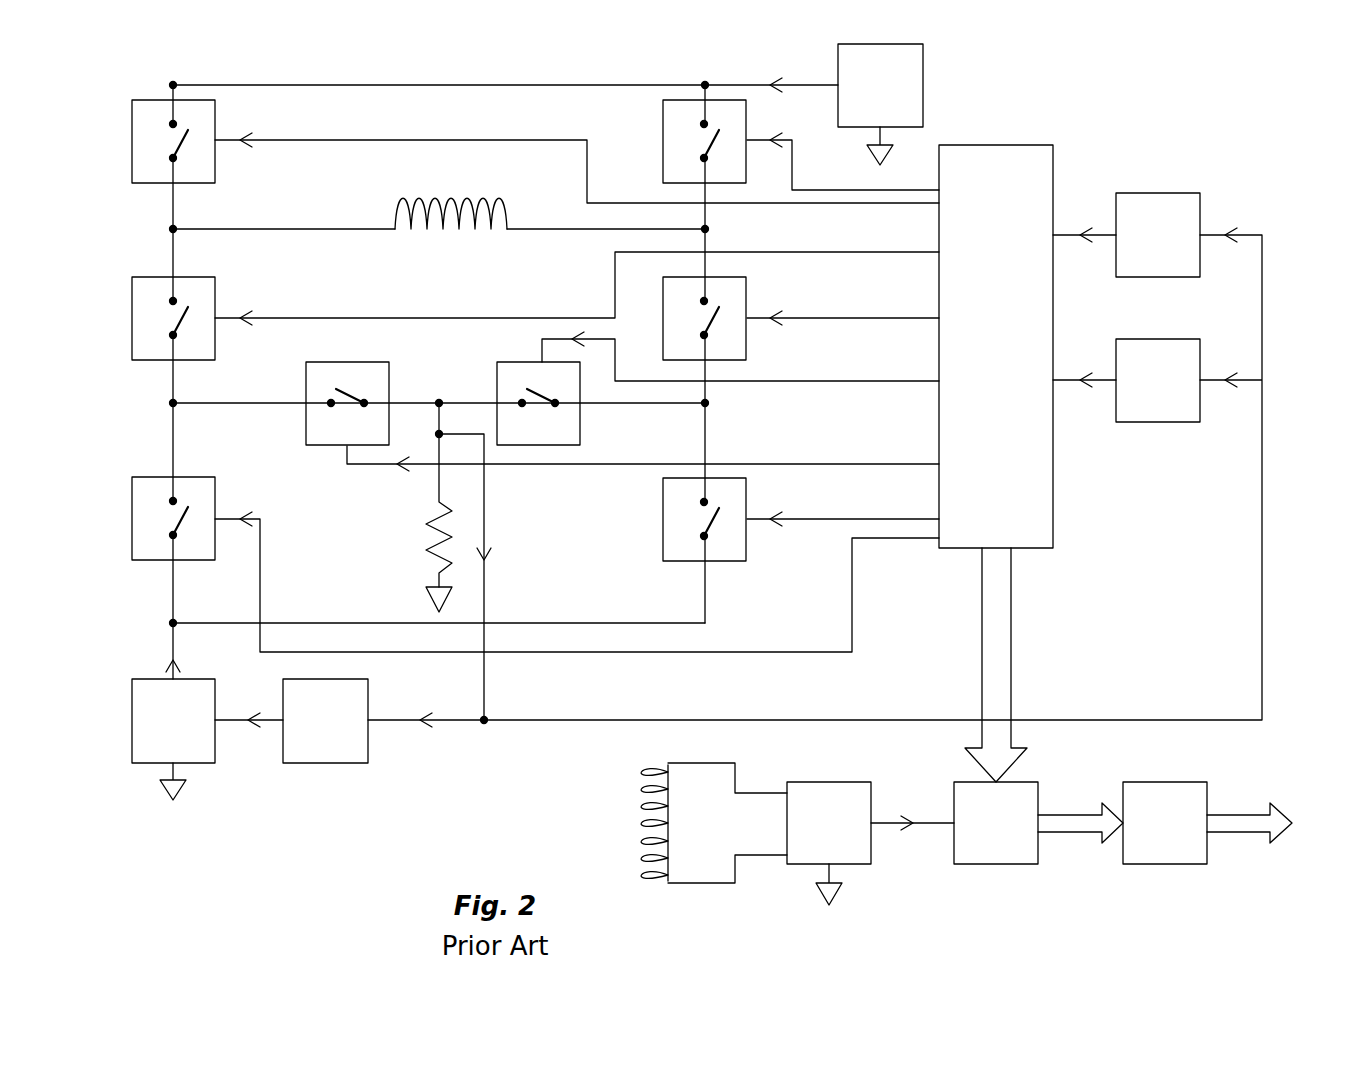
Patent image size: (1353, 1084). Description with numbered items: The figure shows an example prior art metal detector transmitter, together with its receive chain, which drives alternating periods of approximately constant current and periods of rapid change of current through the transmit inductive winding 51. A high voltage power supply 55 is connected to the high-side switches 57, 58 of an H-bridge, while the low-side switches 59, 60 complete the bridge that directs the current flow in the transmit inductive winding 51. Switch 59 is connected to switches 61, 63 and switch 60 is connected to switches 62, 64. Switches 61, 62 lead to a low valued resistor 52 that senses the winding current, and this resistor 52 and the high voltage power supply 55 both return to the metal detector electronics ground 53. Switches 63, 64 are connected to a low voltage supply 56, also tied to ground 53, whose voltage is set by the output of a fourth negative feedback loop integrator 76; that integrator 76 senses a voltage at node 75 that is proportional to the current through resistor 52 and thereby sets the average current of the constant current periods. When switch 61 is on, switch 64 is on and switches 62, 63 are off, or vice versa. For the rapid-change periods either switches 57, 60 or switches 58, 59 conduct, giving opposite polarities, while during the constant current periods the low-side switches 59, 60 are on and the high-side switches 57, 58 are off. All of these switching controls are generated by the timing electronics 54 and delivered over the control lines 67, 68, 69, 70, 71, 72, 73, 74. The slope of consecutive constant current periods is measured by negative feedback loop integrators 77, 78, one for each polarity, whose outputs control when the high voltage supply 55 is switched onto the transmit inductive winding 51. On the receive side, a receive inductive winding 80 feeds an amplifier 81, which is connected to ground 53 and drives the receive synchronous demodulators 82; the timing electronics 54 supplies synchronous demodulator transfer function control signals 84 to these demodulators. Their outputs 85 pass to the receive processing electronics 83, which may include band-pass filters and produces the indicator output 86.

The transmit inductive winding 51 is at (420, 232).
The low valued resistor 52 is at (430, 530).
The metal detector electronics ground 53 is at (893, 160).
The timing electronics 54 is at (996, 346).
The high voltage power supply 55 is at (880, 85).
The low voltage supply 56 is at (173, 721).
The switch 57 is at (132, 135).
The switch 58 is at (663, 155).
The switch 59 is at (132, 313).
The switch 60 is at (747, 300).
The switch 61 is at (306, 378).
The switch 62 is at (497, 378).
The switch 63 is at (132, 520).
The switch 64 is at (663, 520).
The switching control 67 is at (297, 140).
The switching control 68 is at (792, 165).
The switching control 69 is at (300, 318).
The switching control 70 is at (842, 318).
The switching control 71 is at (772, 464).
The switching control 72 is at (850, 381).
The switching control 73 is at (745, 652).
The switching control 74 is at (820, 519).
The node 75 is at (484, 535).
The fourth negative feedback loop integrator 76 is at (325, 721).
The negative feedback loop integrator 77 is at (1158, 235).
The negative feedback loop integrator 78 is at (1158, 380).
The receive inductive winding 80 is at (633, 806).
The amplifier 81 is at (829, 823).
The receive synchronous demodulators 82 is at (996, 823).
The receive processing electronics 83 is at (1165, 823).
The synchronous demodulator transfer function control signals 84 is at (1011, 658).
The outputs 85 is at (1082, 832).
The indicator output 86 is at (1269, 823).